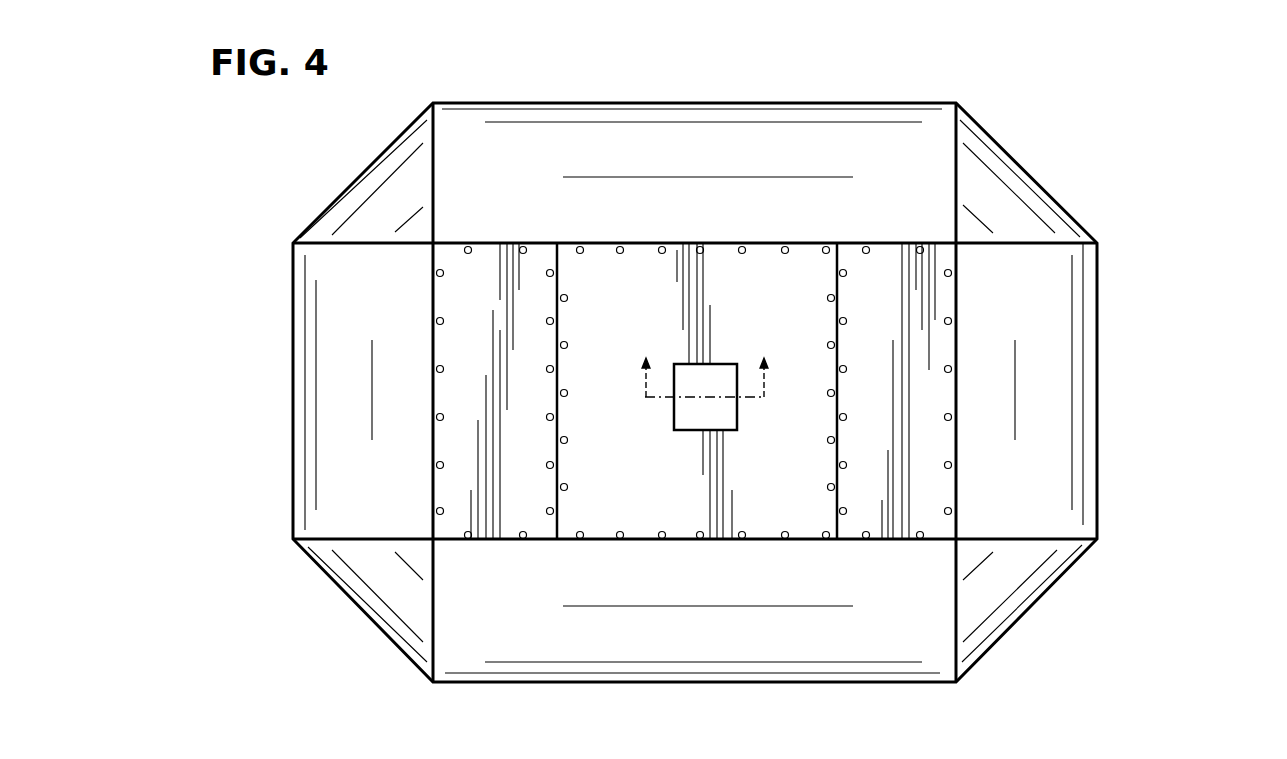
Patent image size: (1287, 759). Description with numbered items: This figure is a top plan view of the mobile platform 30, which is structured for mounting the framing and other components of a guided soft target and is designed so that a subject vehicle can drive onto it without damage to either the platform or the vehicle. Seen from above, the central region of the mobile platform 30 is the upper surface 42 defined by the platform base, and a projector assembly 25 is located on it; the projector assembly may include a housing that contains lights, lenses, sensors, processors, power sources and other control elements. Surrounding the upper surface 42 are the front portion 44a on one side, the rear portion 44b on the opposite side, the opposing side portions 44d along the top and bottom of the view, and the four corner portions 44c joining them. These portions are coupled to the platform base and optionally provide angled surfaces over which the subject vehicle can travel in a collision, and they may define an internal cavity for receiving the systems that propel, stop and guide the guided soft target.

The mobile platform 30 is at (1018, 93).
The upper surface 42 is at (628, 490).
The projector assembly 25 is at (725, 433).
The front portion 44a is at (298, 363).
The rear portion 44b is at (1090, 327).
The corner portions 44c is at (363, 191).
The opposing side portions 44d is at (851, 117).